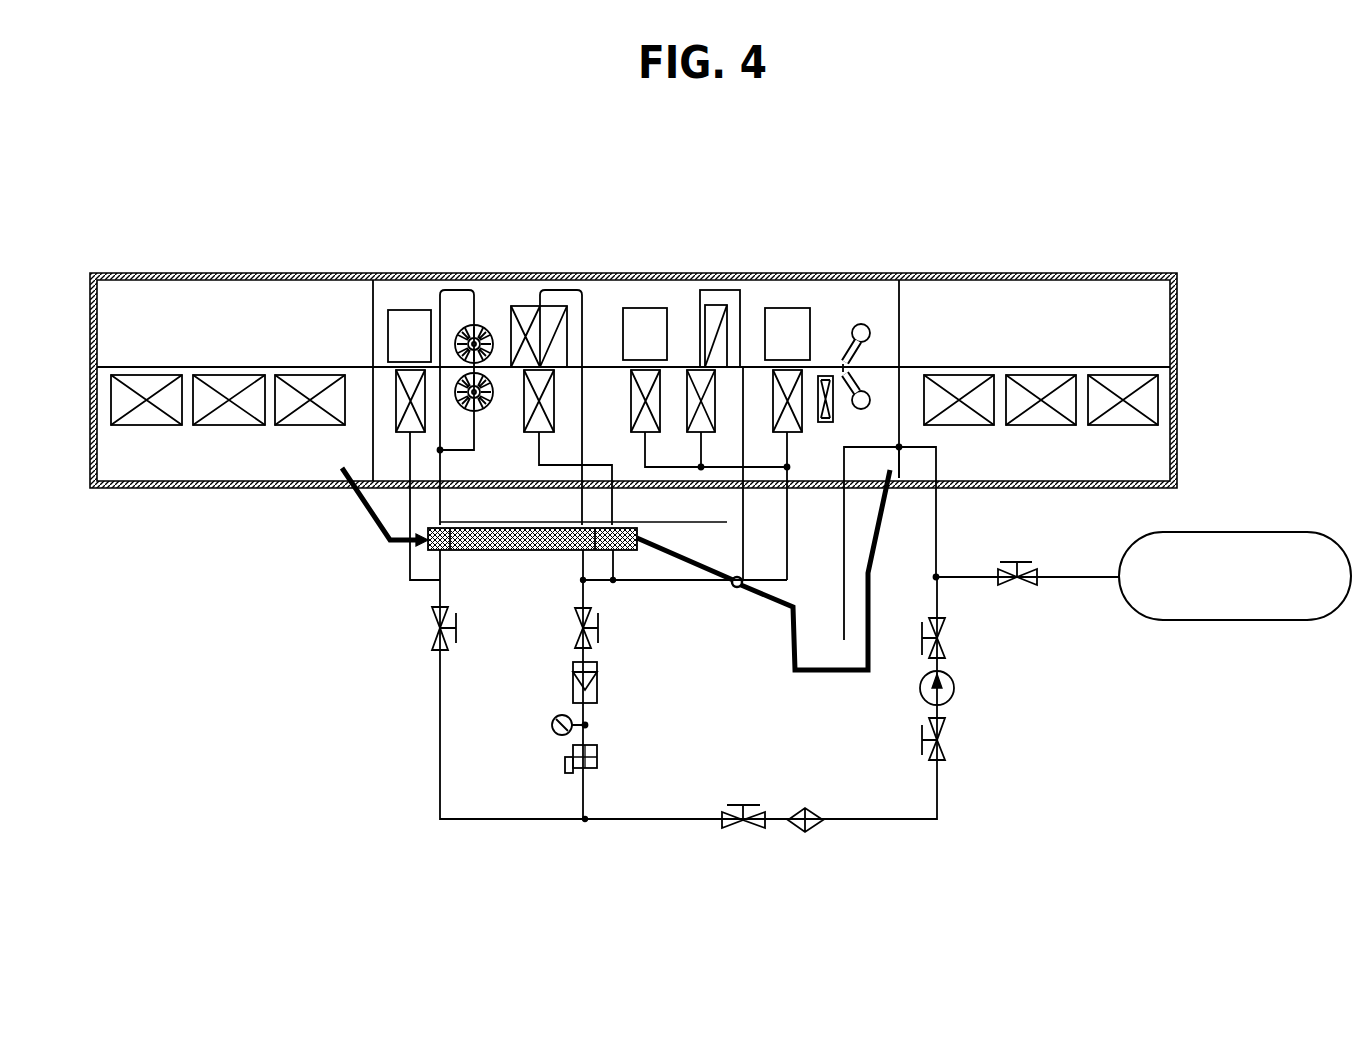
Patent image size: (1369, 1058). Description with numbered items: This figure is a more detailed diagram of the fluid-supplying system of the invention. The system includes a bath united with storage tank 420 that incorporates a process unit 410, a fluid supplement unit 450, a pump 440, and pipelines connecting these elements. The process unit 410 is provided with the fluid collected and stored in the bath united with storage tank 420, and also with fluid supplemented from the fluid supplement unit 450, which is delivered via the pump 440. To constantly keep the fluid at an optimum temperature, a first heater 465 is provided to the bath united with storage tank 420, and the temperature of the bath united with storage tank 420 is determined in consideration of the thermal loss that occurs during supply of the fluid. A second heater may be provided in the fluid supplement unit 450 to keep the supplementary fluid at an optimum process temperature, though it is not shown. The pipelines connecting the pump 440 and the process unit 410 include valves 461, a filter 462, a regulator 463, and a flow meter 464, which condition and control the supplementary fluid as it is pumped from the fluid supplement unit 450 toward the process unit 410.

The process unit 410 is at (833, 300).
The bath united with storage tank 420 is at (372, 513).
The pump 440 is at (955, 687).
The fluid supplement unit 450 is at (1235, 621).
The valves 461 is at (945, 640).
The filter 462 is at (805, 835).
The regulator 463 is at (598, 755).
The flow meter 464 is at (598, 683).
The first heater 465 is at (523, 553).